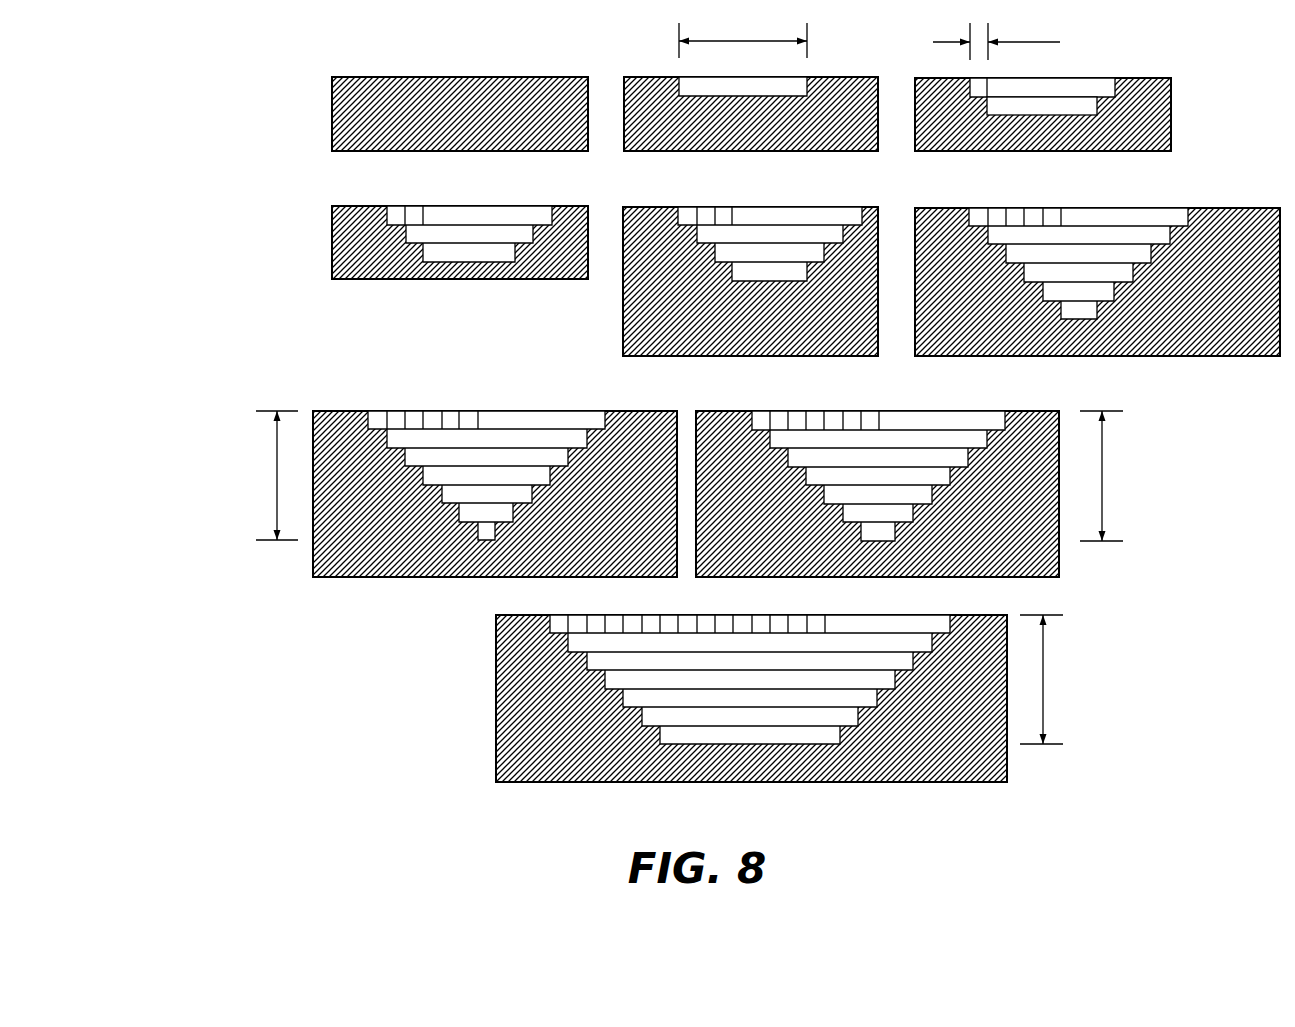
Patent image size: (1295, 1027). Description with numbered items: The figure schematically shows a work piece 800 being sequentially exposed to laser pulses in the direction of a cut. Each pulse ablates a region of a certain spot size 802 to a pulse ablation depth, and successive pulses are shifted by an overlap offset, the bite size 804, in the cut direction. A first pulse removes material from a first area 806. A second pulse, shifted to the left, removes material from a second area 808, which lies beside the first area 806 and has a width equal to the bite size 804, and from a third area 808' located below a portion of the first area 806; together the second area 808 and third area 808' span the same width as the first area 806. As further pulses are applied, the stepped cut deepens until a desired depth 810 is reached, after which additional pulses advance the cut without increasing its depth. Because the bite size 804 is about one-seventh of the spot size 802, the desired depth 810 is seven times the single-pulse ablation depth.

The work piece 800 is at (548, 78).
The spot size 802 is at (777, 39).
The bite size 804 is at (1028, 43).
The first area 806 is at (782, 88).
The second area 808 is at (947, 48).
The third area 808' is at (1112, 97).
The desired depth 810 is at (273, 479).